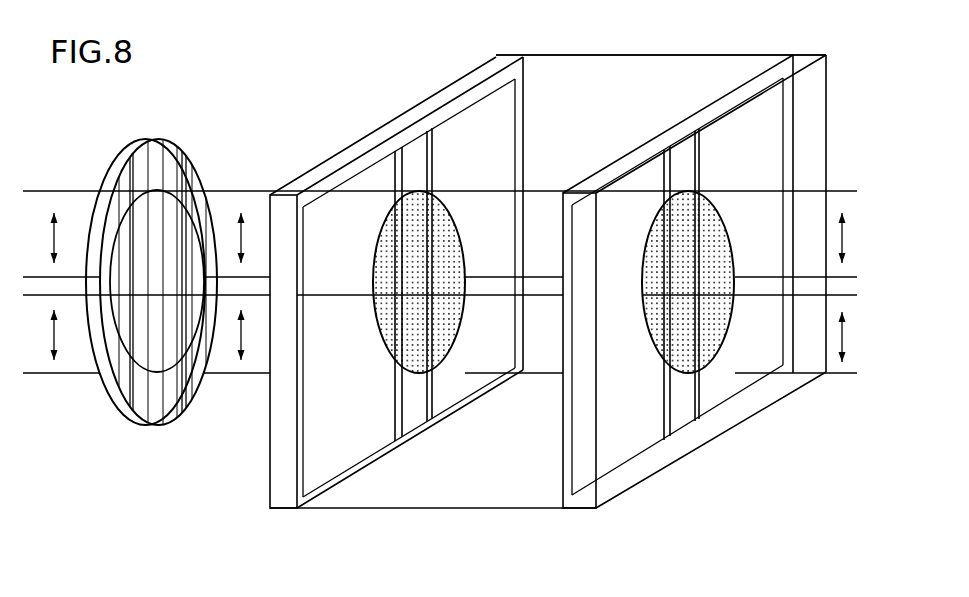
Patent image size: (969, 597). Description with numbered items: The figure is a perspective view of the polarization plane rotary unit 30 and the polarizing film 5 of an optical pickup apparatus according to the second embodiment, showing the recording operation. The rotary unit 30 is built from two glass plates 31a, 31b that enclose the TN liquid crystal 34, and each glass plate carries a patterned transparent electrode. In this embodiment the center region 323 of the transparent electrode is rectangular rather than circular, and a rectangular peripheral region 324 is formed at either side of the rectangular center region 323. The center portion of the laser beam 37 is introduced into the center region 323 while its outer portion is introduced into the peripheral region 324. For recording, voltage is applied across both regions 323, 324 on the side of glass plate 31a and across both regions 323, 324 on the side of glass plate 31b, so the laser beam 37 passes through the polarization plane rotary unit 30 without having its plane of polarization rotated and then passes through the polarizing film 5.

The polarizing film 5 is at (156, 431).
The polarization plane rotary unit 30 is at (442, 517).
The glass plate 31a is at (582, 503).
The glass plate 31b is at (282, 503).
The center region 323 is at (412, 157).
The peripheral region 324 is at (440, 393).
The TN liquid crystal 34 is at (630, 77).
The laser beam 37 is at (383, 335).